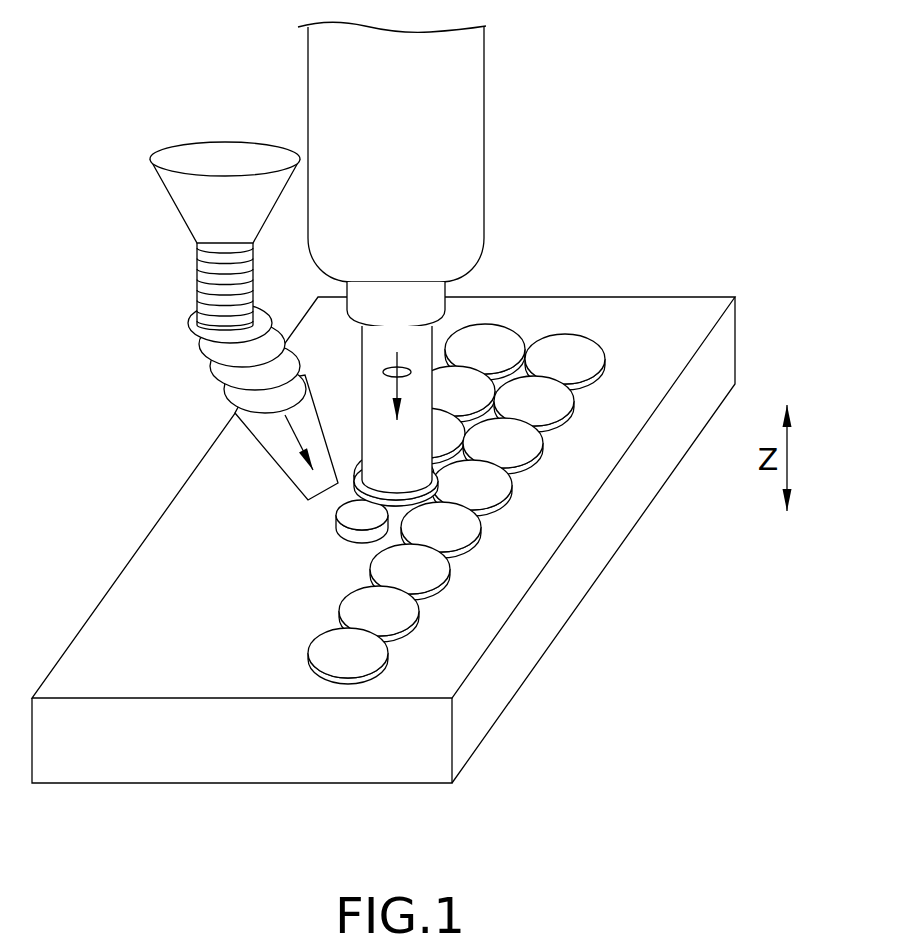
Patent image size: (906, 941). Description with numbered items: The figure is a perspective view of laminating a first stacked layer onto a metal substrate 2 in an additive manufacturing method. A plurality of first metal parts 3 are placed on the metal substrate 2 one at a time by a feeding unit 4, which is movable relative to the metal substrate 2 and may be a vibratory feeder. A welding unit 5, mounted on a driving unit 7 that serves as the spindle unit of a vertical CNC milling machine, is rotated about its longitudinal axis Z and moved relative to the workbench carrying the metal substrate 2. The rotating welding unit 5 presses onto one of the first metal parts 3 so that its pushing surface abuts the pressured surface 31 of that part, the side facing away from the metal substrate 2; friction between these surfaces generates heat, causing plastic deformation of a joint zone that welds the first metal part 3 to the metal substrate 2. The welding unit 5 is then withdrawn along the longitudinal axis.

The metal substrate 2 is at (678, 296).
The first metal parts 3 is at (421, 443).
The pressured surface 31 is at (433, 490).
The feeding unit 4 is at (197, 279).
The welding unit 5 is at (433, 390).
The driving unit 7 is at (306, 70).